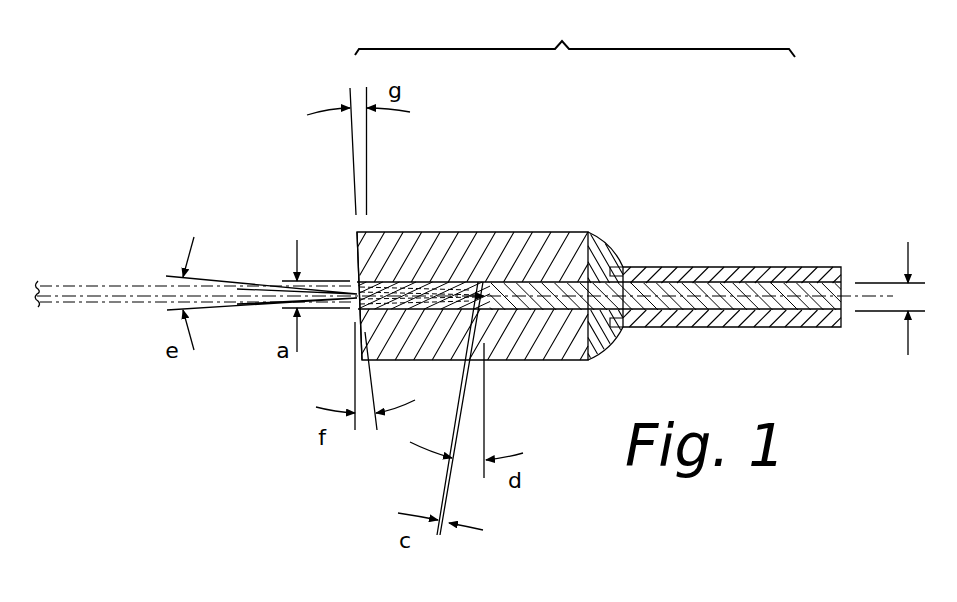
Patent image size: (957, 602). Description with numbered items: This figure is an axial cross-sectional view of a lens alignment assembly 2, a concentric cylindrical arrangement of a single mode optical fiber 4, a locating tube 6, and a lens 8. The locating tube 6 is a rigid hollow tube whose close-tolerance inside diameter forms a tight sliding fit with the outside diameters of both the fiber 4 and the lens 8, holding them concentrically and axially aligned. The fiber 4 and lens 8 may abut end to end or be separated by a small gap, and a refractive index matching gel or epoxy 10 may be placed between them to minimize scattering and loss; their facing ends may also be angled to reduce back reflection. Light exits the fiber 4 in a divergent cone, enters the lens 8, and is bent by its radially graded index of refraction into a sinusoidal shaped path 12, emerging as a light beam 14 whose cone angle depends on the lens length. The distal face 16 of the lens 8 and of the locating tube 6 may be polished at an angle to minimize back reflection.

The lens alignment assembly 2 is at (575, 34).
The single mode optical fiber 4 is at (702, 295).
The locating tube 6 is at (532, 257).
The lens 8 is at (428, 282).
The refractive index matching gel or epoxy 10 is at (512, 312).
The sinusoidal shaped path 12 is at (370, 268).
The light beam 14 is at (95, 284).
The distal face 16 is at (355, 302).